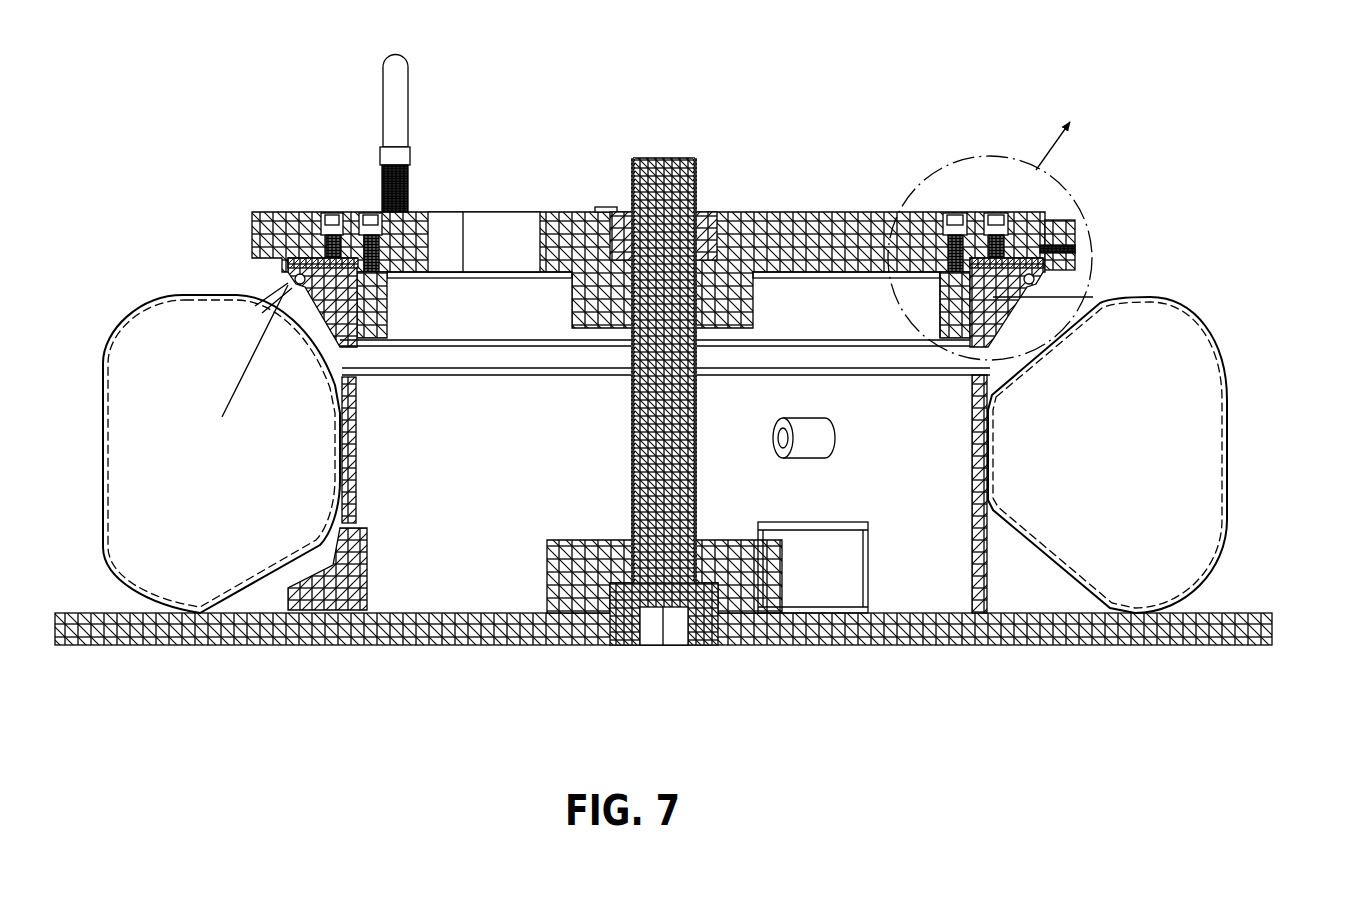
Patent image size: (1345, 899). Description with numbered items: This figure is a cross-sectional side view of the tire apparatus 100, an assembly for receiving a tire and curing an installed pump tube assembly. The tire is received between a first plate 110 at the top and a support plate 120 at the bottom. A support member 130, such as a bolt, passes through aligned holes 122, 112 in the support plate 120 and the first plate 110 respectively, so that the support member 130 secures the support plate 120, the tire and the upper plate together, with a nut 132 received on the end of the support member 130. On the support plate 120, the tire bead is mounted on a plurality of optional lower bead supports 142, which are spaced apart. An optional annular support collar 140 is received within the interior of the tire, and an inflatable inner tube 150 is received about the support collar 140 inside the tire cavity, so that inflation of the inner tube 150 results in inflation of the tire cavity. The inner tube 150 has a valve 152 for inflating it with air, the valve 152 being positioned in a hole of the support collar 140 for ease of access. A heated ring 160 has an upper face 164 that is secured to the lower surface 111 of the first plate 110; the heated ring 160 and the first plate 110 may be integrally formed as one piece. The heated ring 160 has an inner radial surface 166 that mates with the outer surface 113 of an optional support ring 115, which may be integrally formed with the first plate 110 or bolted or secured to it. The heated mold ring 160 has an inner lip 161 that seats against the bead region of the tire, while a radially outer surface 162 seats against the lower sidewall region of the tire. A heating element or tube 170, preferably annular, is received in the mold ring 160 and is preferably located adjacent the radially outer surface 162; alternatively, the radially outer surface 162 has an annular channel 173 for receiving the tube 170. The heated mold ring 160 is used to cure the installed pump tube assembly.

The tire apparatus 100 is at (1159, 152).
The first plate 110 is at (798, 208).
The lower surface 111 is at (289, 269).
The hole 112 is at (708, 213).
The outer surface 113 is at (1008, 310).
The support ring 115 is at (937, 323).
The support plate 120 is at (897, 648).
The hole 122 is at (613, 607).
The support member 130 is at (672, 170).
The nut 132 is at (630, 212).
The support collar 140 is at (510, 480).
The lower bead support 142 is at (358, 578).
The inflatable inner tube 150 is at (1230, 428).
The valve 152 is at (802, 458).
The heated ring 160 is at (323, 308).
The inner lip 161 is at (340, 336).
The radially outer surface 162 is at (222, 417).
The upper face 164 is at (312, 258).
The inner radial surface 166 is at (368, 318).
The heating element 170 is at (1036, 280).
The annular channel 173 is at (290, 283).